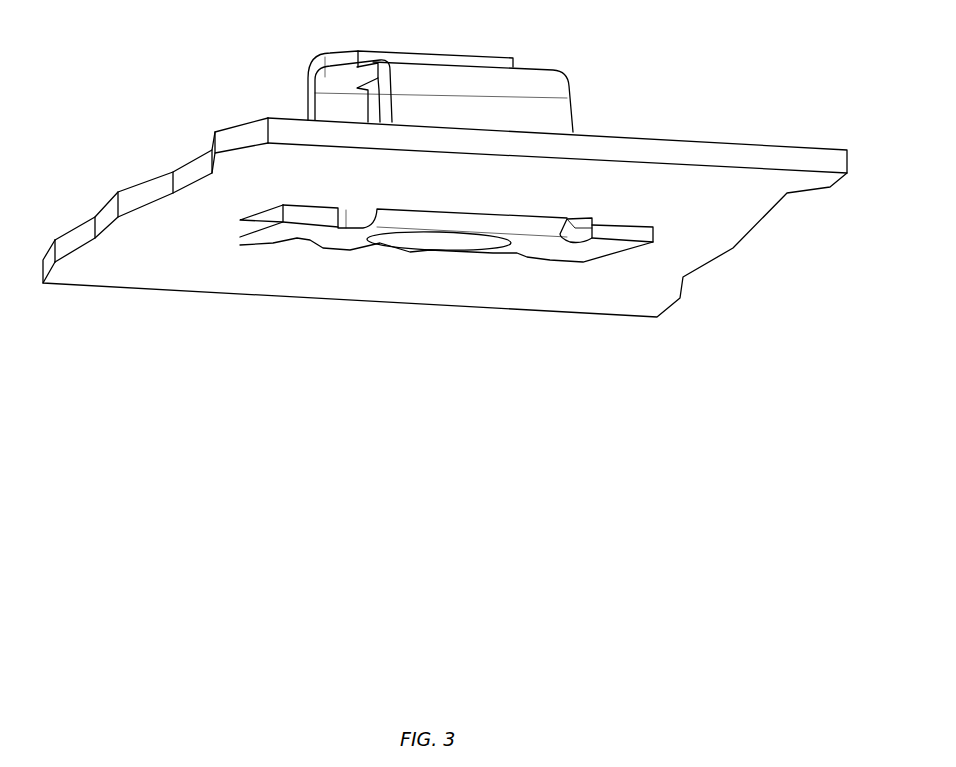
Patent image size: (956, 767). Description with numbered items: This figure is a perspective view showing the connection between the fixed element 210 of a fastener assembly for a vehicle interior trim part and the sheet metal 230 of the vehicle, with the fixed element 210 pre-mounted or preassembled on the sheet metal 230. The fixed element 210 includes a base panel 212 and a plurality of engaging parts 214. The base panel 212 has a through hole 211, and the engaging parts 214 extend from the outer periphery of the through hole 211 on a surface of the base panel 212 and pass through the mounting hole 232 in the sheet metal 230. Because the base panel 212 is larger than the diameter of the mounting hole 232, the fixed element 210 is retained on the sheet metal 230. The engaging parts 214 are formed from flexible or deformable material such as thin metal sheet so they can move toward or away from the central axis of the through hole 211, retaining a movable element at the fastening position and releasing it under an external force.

The fixed element 210 is at (583, 82).
The through hole 211 is at (432, 242).
The base panel 212 is at (590, 253).
The engaging parts 214 is at (382, 50).
The sheet metal 230 is at (463, 292).
The mounting hole 232 is at (590, 220).